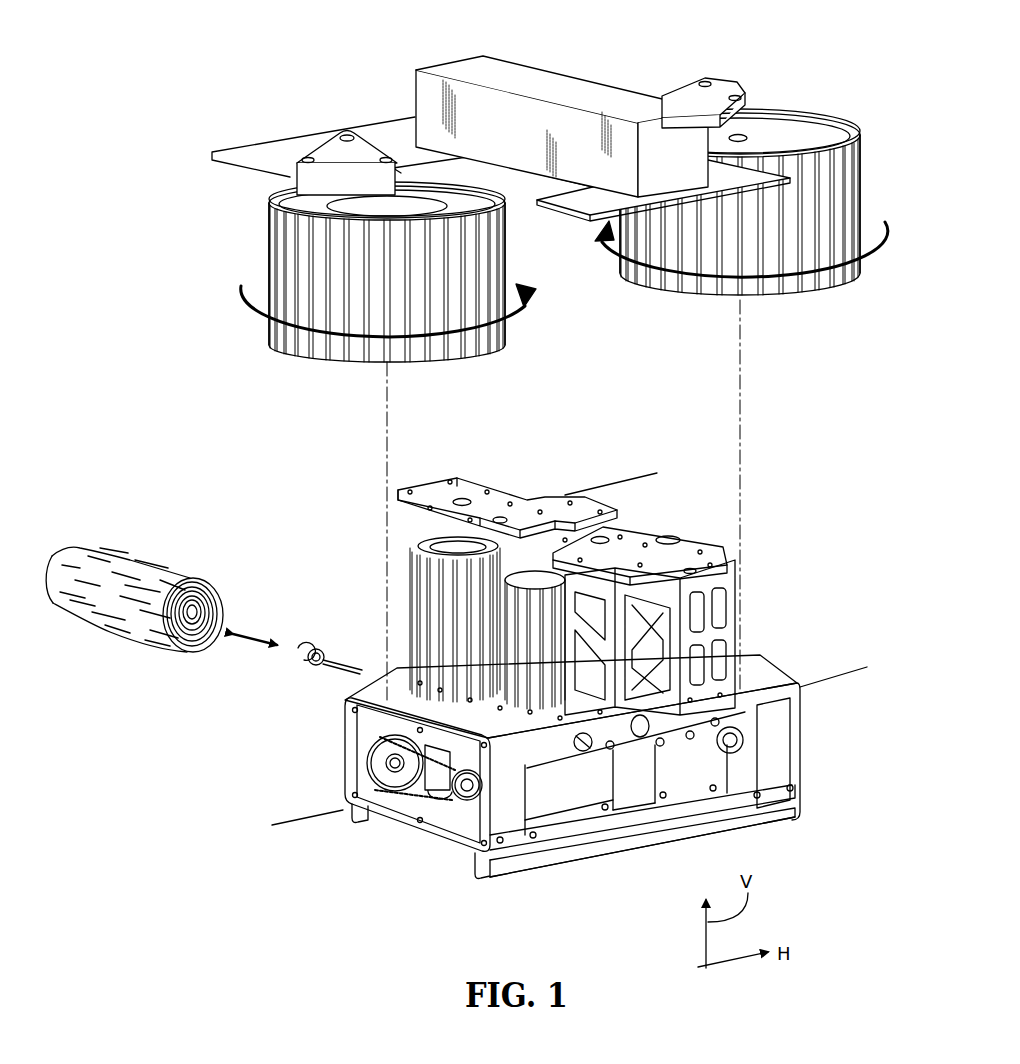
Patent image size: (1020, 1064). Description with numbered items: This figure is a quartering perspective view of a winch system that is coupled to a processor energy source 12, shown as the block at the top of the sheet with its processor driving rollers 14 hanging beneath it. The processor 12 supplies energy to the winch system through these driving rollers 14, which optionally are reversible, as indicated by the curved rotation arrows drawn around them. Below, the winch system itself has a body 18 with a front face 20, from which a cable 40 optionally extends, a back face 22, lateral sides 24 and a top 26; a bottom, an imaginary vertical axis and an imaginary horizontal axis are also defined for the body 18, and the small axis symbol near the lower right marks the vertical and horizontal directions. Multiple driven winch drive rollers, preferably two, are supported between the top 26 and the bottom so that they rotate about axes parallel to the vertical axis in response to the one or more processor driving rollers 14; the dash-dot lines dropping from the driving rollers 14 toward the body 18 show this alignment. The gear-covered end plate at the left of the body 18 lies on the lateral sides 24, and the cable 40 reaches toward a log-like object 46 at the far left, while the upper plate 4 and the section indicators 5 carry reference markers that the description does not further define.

The top plate / frame 4 is at (634, 477).
The section line 5 is at (292, 818).
The processor energy source 12 is at (548, 70).
The processor driving rollers 14 is at (270, 232).
The body 18 is at (780, 738).
The front face 20 is at (330, 765).
The back face 22 is at (768, 807).
The lateral sides 24 is at (412, 838).
The top 26 is at (650, 548).
The cable 40 is at (318, 640).
The log 46 is at (120, 552).